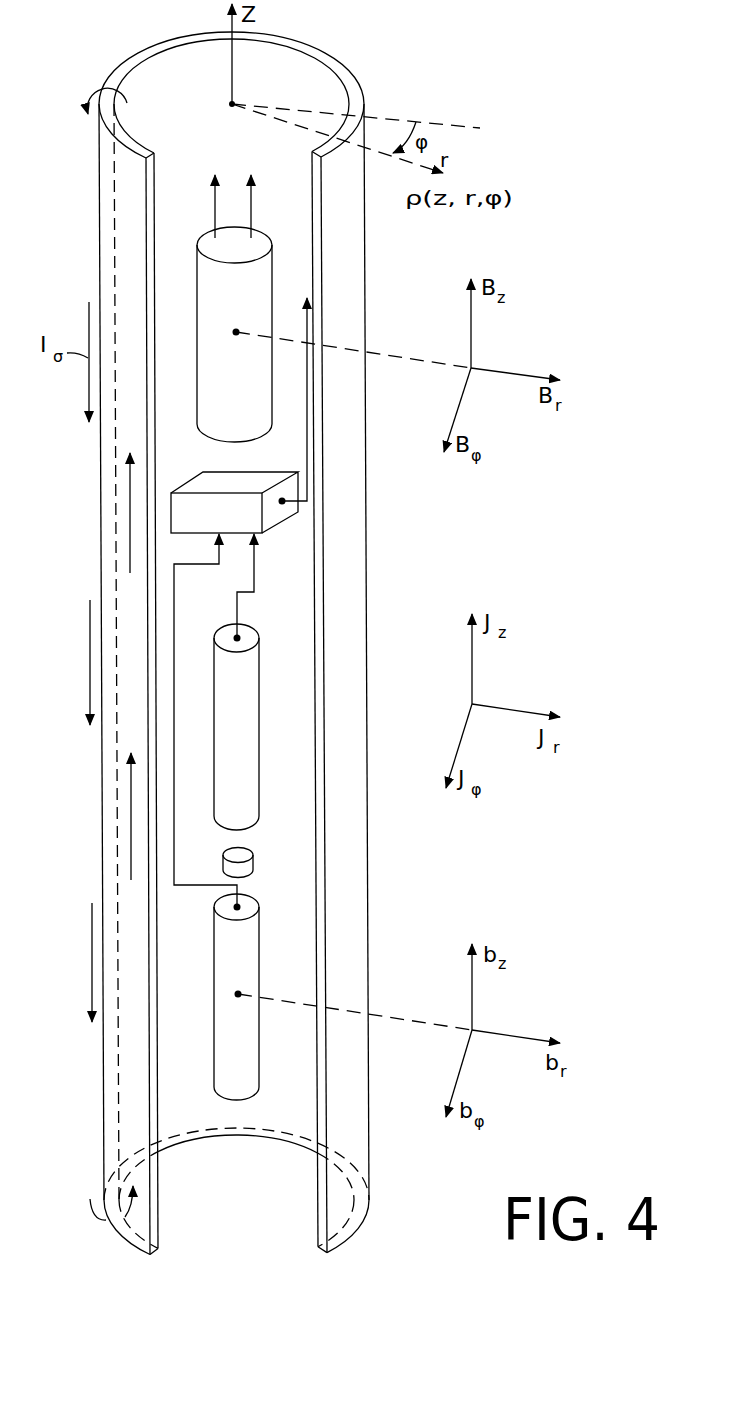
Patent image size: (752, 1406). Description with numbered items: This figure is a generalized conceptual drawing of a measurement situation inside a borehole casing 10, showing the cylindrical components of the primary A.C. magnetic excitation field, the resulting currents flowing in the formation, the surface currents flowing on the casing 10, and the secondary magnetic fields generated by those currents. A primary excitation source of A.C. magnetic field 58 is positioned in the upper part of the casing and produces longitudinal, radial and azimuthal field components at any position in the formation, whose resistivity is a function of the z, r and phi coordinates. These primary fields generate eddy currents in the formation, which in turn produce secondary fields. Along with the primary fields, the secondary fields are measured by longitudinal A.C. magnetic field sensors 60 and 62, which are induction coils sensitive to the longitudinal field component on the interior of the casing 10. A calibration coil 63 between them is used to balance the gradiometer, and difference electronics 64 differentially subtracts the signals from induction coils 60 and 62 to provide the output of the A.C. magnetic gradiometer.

The borehole casing 10 is at (360, 82).
The primary excitation source of A.C. magnetic field 58 is at (273, 282).
The difference electronics 64 is at (268, 530).
The longitudinal A.C. magnetic field sensor 60 is at (259, 751).
The calibration coil 63 is at (254, 857).
The longitudinal A.C. magnetic field sensor 62 is at (260, 944).